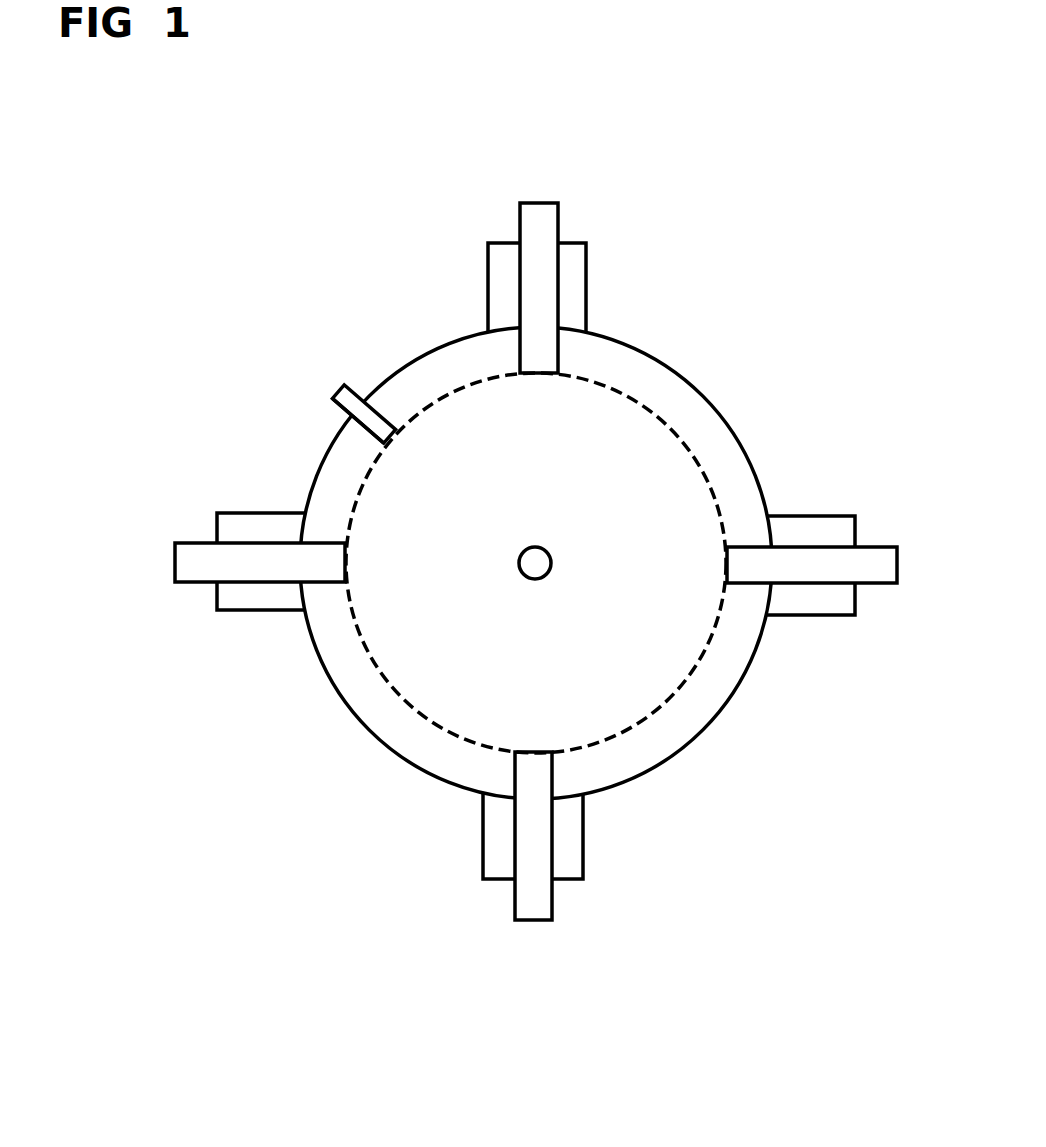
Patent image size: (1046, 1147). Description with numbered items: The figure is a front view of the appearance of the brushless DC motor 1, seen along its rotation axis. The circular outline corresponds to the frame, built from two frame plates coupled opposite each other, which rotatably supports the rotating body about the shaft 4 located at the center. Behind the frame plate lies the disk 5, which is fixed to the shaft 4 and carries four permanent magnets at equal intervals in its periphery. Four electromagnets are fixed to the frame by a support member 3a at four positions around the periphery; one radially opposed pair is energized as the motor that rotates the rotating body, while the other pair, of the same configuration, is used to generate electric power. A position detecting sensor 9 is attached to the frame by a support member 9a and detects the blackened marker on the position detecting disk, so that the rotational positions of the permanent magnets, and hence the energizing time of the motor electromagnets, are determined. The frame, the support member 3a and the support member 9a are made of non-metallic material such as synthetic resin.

The brushless DC motor 1 is at (810, 197).
The support member 3a is at (540, 292).
The shaft 4 is at (533, 565).
The disk 5 is at (618, 668).
The position detecting sensor 9 is at (342, 370).
The support member 9a is at (367, 417).